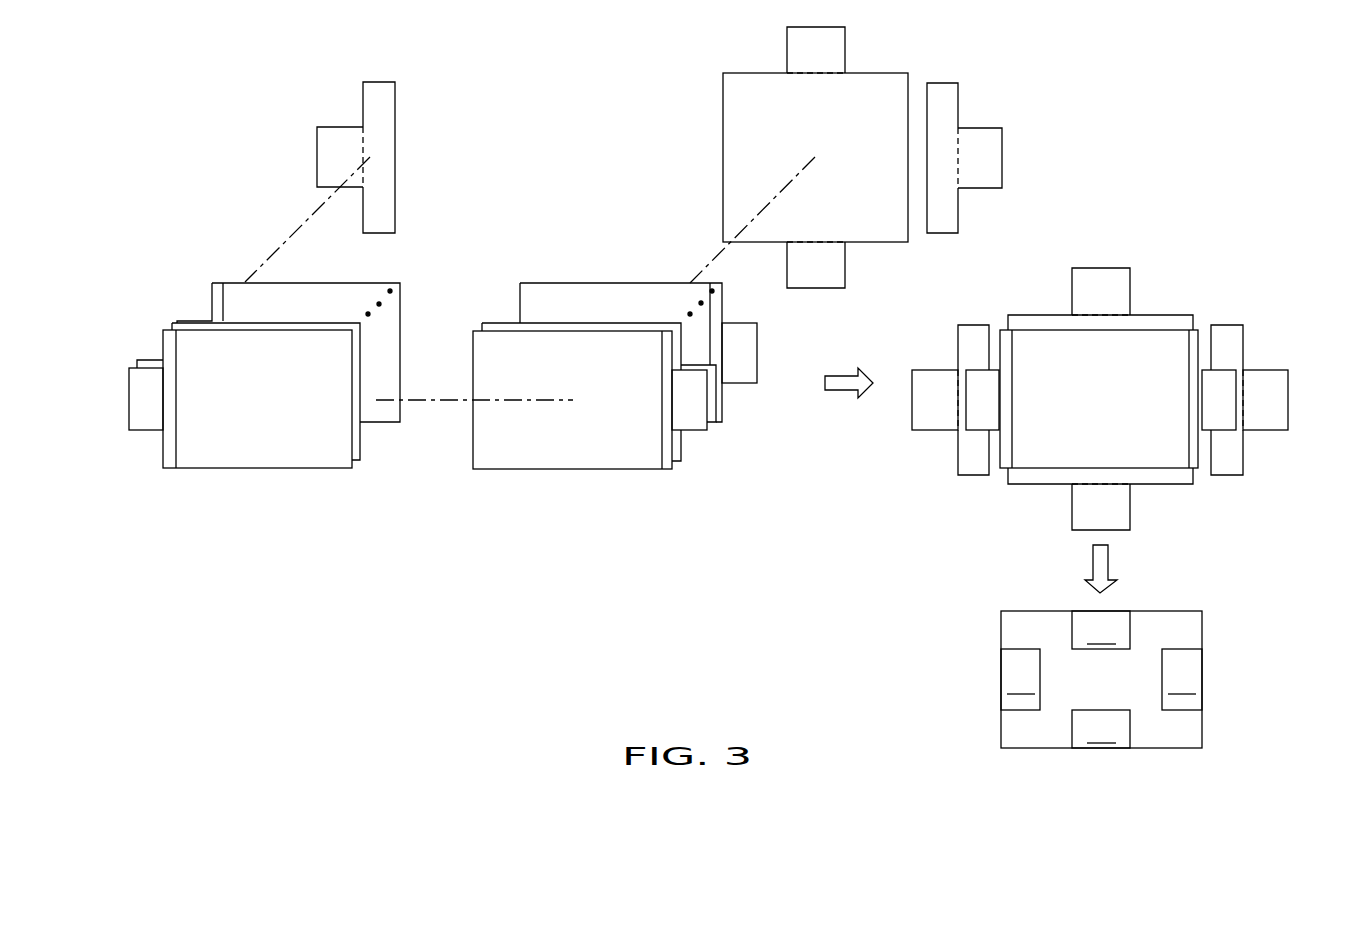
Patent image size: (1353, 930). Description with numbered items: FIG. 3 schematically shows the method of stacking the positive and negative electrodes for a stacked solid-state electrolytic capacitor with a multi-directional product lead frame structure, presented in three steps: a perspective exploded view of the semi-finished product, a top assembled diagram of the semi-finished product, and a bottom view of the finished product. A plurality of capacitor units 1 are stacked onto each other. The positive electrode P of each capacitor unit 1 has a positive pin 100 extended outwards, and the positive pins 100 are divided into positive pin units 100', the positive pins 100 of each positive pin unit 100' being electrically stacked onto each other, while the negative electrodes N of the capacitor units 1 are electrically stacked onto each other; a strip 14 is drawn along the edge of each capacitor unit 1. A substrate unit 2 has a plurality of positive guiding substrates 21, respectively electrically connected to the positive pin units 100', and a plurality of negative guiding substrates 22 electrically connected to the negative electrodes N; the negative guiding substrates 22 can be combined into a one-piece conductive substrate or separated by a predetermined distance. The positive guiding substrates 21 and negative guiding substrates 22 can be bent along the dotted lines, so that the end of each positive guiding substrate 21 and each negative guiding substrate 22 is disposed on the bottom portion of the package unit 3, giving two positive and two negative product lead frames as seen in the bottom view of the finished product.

The capacitor unit 1 is at (247, 472).
The substrate unit 2 is at (776, 273).
The package unit 3 is at (1205, 624).
The electrode tab connecting strip 14 is at (170, 462).
The positive guiding substrate 21 is at (317, 148).
The negative guiding substrate 22 is at (847, 47).
The positive pin 100 is at (454, 366).
The positive pin unit 100' is at (703, 380).
The positive electrode P is at (128, 424).
The negative electrode N is at (308, 449).